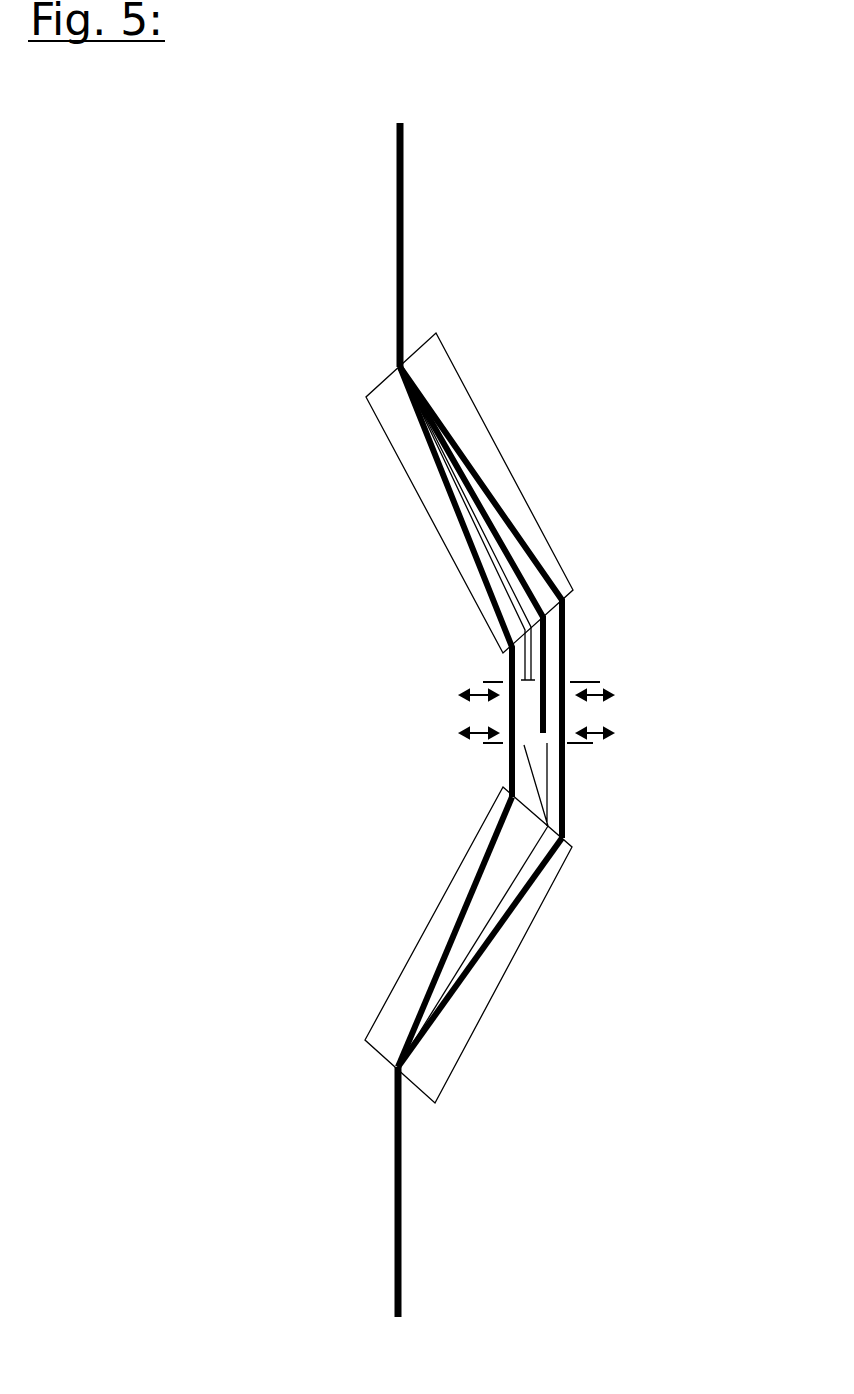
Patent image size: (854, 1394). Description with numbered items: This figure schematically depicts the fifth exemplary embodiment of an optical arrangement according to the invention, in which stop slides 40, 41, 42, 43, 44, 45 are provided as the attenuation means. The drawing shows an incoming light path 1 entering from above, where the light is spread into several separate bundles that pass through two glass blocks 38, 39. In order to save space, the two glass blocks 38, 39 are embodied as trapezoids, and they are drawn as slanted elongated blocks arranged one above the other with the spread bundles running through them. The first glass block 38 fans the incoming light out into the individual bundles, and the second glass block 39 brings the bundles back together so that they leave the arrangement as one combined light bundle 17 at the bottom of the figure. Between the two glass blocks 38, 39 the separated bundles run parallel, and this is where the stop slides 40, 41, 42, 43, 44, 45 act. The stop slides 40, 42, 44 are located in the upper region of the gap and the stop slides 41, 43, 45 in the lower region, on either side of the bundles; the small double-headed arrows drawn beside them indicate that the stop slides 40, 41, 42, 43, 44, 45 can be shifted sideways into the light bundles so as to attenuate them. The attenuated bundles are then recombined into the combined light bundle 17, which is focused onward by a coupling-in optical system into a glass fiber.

The input optical fiber 1 is at (405, 223).
The combined light bundle 17 is at (400, 1227).
The glass block 38 is at (447, 400).
The glass block 39 is at (450, 1055).
The stop slide 40 is at (523, 680).
The stop slide 41 is at (572, 745).
The stop slide 42 is at (588, 682).
The stop slide 43 is at (563, 780).
The stop slide 44 is at (500, 682).
The stop slide 45 is at (500, 745).